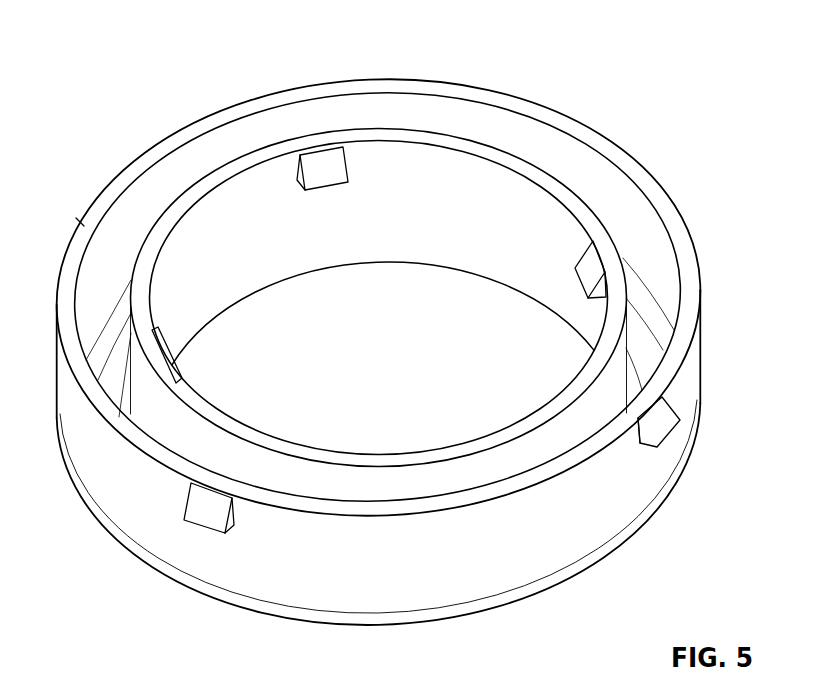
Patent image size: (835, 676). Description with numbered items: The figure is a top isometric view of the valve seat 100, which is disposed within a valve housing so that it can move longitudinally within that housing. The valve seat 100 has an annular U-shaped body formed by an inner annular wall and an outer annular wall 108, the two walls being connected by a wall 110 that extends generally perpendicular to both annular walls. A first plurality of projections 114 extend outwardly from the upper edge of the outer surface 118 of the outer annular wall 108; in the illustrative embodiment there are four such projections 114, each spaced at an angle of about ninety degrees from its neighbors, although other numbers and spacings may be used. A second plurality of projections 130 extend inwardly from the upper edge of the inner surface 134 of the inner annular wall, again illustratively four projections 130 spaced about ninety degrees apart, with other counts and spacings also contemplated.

The valve seat 100 is at (181, 72).
The outer annular wall 108 is at (538, 538).
The wall 110 is at (648, 340).
The first plurality of projections 114 is at (80, 222).
The outer surface 118 is at (93, 472).
The second plurality of projections 130 is at (580, 258).
The inner surface 134 is at (400, 207).